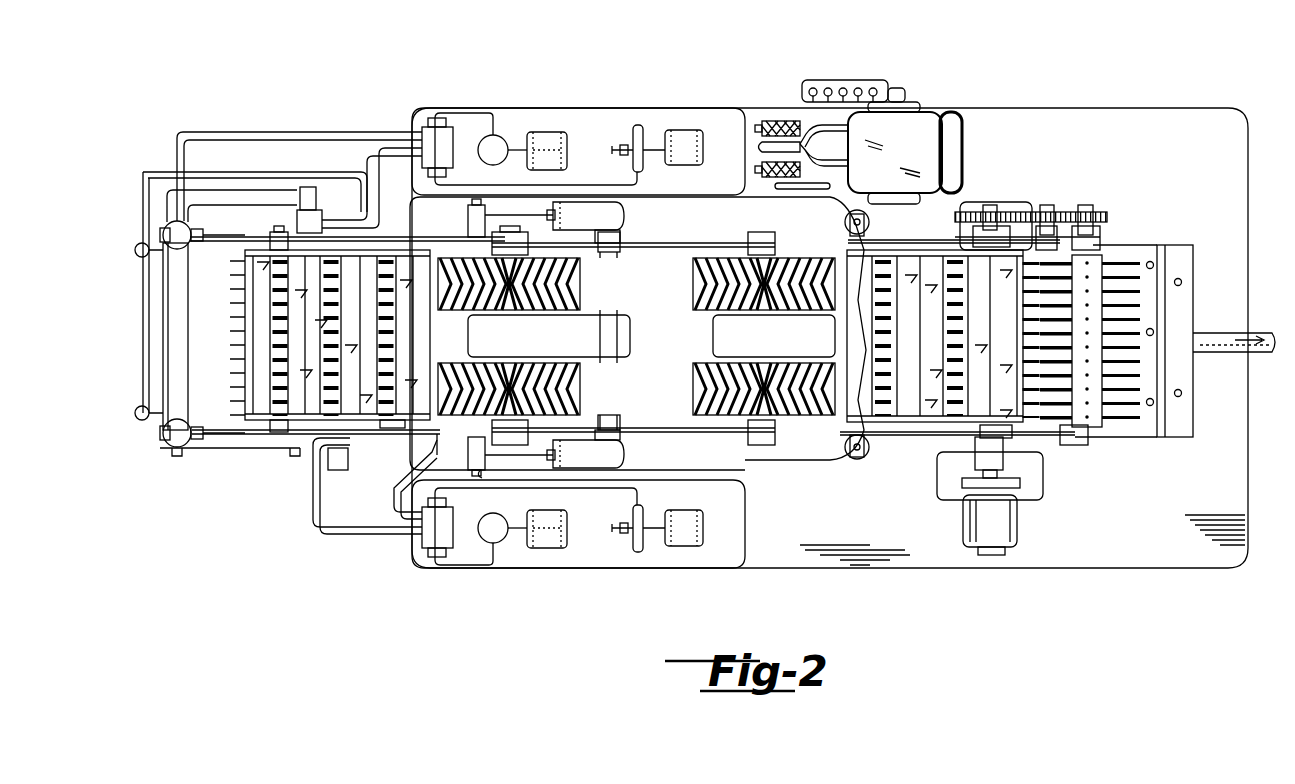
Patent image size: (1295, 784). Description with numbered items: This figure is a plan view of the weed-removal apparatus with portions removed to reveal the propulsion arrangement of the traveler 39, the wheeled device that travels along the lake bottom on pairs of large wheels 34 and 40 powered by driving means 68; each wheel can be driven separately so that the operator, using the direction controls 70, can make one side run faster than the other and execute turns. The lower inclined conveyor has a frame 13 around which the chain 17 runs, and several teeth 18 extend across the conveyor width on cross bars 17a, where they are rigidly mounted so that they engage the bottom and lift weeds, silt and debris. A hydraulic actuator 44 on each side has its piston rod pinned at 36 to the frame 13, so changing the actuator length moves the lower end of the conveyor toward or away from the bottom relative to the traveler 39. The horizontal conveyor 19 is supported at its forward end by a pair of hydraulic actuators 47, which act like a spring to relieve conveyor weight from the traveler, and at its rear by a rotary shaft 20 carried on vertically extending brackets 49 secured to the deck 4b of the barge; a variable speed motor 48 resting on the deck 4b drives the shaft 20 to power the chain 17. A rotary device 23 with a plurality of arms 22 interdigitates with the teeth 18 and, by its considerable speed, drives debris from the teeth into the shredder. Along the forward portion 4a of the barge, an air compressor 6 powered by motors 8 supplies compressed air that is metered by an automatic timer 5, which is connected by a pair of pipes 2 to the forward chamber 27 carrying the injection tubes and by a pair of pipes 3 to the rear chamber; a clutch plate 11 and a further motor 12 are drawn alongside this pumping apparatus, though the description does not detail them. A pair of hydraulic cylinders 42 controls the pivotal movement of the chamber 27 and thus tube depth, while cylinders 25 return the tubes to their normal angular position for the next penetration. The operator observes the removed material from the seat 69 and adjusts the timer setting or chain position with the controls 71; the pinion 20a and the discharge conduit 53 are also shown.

The pipes 2 is at (258, 195).
The pipes 3 is at (270, 132).
The forward portion of the barge 4a is at (537, 108).
The deck of the barge 4b is at (1175, 108).
The automatic timer 5 is at (440, 140).
The air compressor 6 is at (496, 140).
The motors 8 is at (558, 145).
The clutch plate 11 is at (640, 125).
The electric motor 12 is at (692, 132).
The conveyor frame 13 is at (412, 237).
The chain 17 is at (915, 250).
The cross bars 17a is at (250, 283).
The teeth 18 is at (296, 329).
The horizontal conveyor 19 is at (878, 240).
The rotary shaft 20 is at (990, 205).
The pinion 20a is at (1047, 205).
The arms 22 is at (1120, 275).
The rotary device 23 is at (1092, 205).
The cylinders 25 is at (135, 252).
The chamber 27 is at (163, 323).
The wheels 34 is at (448, 305).
The pin points 36 is at (493, 472).
The traveler 39 is at (704, 243).
The wheels 40 is at (693, 285).
The hydraulic cylinders 42 is at (183, 242).
The hydraulic actuator 44 is at (624, 216).
The hydraulic actuators 47 is at (845, 222).
The variable speed motor 48 is at (1005, 527).
The brackets 49 is at (963, 202).
The discharge conduit 53 is at (1222, 333).
The driving means 68 is at (718, 338).
The seat 69 is at (915, 120).
The direction controls 70 is at (812, 128).
The controls 71 is at (850, 80).